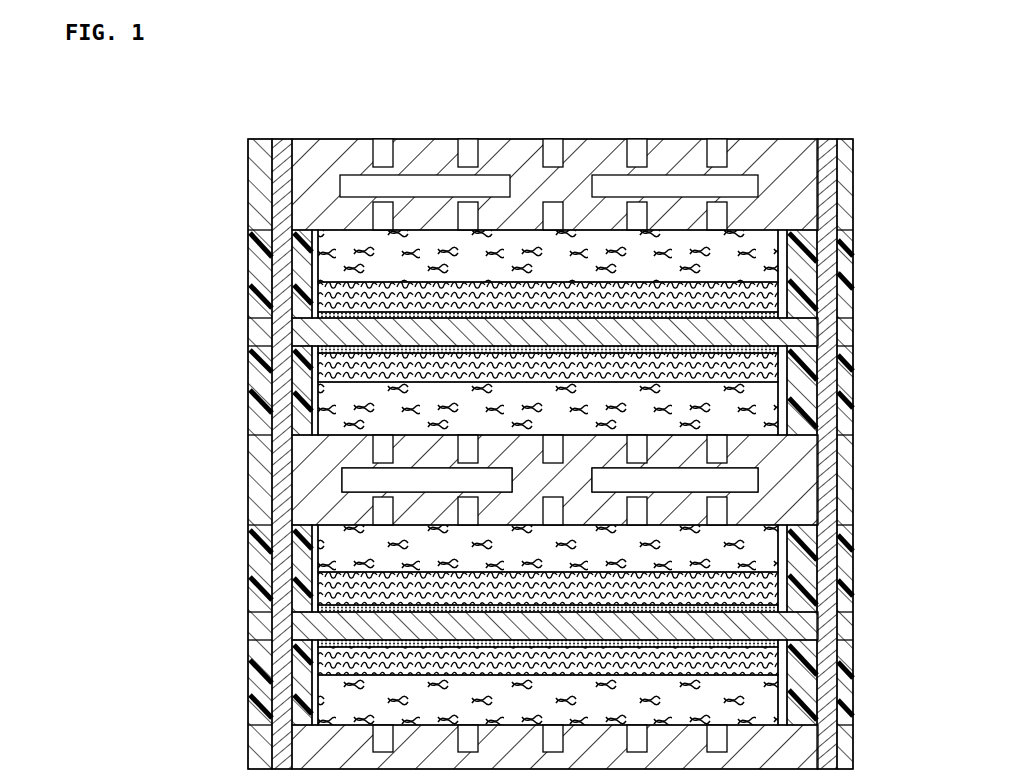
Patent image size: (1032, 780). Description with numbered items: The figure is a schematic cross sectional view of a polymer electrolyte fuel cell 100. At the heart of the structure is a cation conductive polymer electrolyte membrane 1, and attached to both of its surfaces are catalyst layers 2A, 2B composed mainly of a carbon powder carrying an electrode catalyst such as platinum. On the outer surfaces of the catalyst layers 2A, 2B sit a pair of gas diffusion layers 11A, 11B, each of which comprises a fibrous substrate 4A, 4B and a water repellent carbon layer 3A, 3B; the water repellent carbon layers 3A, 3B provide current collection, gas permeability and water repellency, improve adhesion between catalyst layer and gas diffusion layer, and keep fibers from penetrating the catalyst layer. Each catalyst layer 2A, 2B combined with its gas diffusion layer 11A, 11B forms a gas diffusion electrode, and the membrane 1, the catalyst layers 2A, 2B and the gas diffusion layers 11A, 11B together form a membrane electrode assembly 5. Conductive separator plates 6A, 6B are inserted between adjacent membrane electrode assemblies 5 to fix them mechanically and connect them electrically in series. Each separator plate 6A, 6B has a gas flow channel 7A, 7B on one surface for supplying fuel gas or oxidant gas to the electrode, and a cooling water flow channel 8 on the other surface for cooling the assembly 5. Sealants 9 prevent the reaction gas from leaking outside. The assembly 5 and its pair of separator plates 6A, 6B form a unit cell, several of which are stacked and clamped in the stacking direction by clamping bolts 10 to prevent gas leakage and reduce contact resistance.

The polymer electrolyte fuel cell 100 is at (801, 116).
The polymer electrolyte membrane 1 is at (300, 332).
The catalyst layer 2A is at (330, 315).
The catalyst layer 2B is at (330, 350).
The water repellent carbon layer 3A is at (330, 296).
The water repellent carbon layer 3B is at (330, 368).
The fibrous substrate 4A is at (340, 260).
The fibrous substrate 4B is at (340, 410).
The membrane electrode assembly 5 is at (465, 435).
The conductive separator plate 6A is at (258, 211).
The conductive separator plate 6B is at (262, 160).
The gas flow channel 7A is at (716, 214).
The gas flow channel 7B is at (712, 448).
The cooling water flow channel 8 is at (340, 190).
The sealant 9 is at (800, 306).
The clamping bolt 10 is at (818, 375).
The gas diffusion layer 11A is at (465, 271).
The gas diffusion layer 11B is at (462, 401).